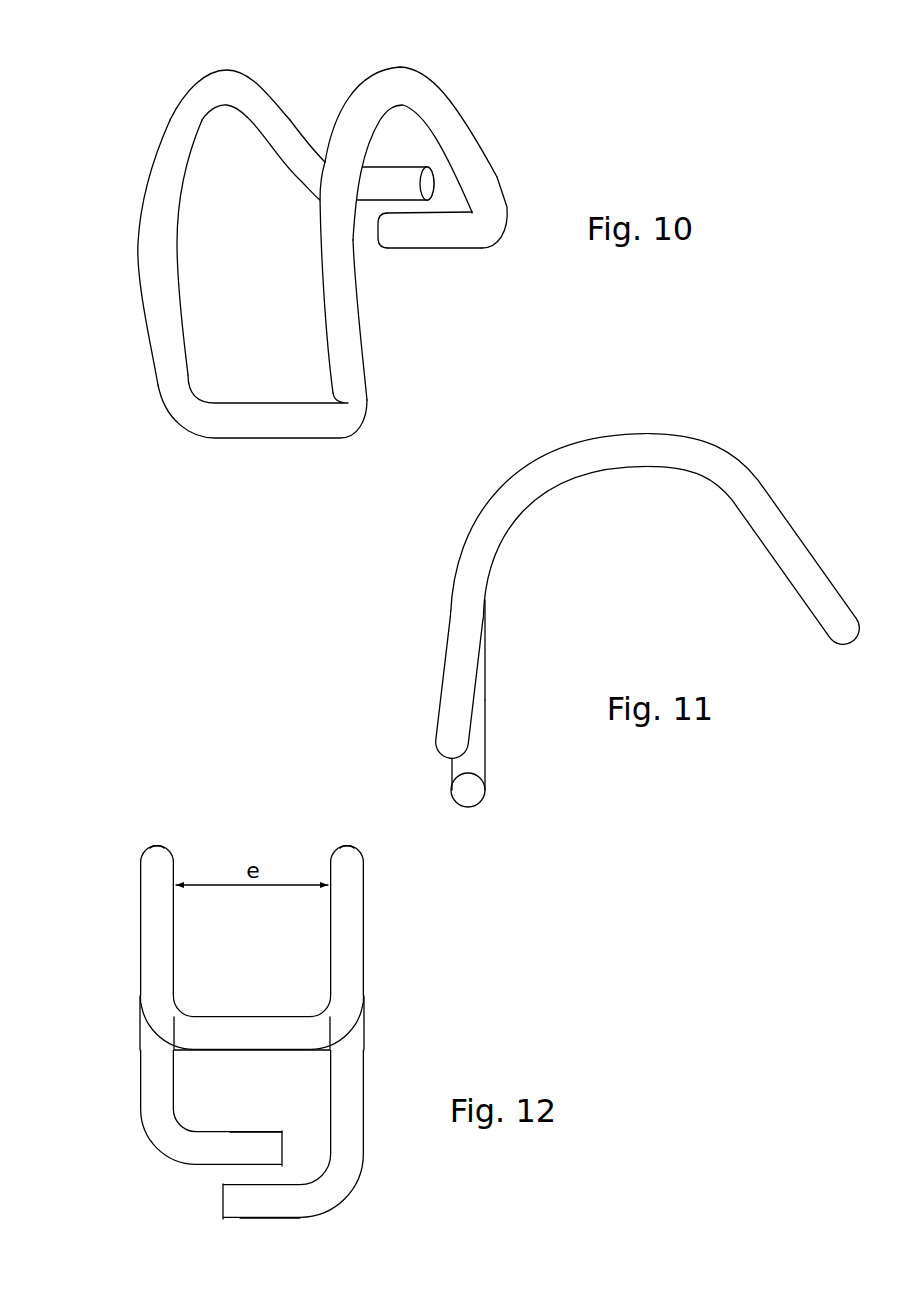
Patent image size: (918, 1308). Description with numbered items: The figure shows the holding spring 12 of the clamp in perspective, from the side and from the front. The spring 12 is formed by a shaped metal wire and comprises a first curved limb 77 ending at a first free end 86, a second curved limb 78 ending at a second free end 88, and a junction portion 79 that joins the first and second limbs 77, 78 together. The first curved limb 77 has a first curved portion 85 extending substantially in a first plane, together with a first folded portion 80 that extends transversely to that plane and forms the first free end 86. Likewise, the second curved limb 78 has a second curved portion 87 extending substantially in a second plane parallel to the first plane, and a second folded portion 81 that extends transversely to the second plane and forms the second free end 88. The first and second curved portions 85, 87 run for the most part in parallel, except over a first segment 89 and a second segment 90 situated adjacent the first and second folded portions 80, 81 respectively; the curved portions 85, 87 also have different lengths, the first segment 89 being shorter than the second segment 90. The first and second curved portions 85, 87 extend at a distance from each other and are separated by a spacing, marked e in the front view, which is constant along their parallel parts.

In FIG. 10, the spring 12 is at (116, 310).
In FIG. 11, the spring 12 is at (797, 462).
In FIG. 12, the spring 12 is at (443, 970).
In FIG. 10, the first curved limb 77 is at (217, 68).
In FIG. 11, the first curved limb 77 is at (580, 441).
In FIG. 12, the first curved limb 77 is at (158, 845).
In FIG. 10, the second curved limb 78 is at (400, 68).
In FIG. 11, the second curved limb 78 is at (487, 666).
In FIG. 12, the second curved limb 78 is at (347, 845).
In FIG. 10, the junction portion 79 is at (260, 422).
In FIG. 12, the junction portion 79 is at (252, 1027).
In FIG. 10, the first folded portion 80 is at (397, 177).
In FIG. 12, the first folded portion 80 is at (231, 1142).
In FIG. 10, the second folded portion 81 is at (422, 240).
In FIG. 12, the second folded portion 81 is at (248, 1208).
In FIG. 10, the first curved portion 85 is at (170, 165).
In FIG. 11, the first curved portion 85 is at (690, 447).
In FIG. 12, the first curved portion 85 is at (145, 890).
In FIG. 10, the first free end 86 is at (428, 183).
In FIG. 12, the first free end 86 is at (283, 1145).
In FIG. 10, the second curved portion 87 is at (328, 240).
In FIG. 12, the second curved portion 87 is at (355, 888).
In FIG. 10, the second free end 88 is at (377, 243).
In FIG. 11, the second free end 88 is at (474, 800).
In FIG. 12, the second free end 88 is at (222, 1200).
In FIG. 10, the first segment 89 is at (293, 124).
In FIG. 11, the first segment 89 is at (440, 718).
In FIG. 12, the first segment 89 is at (147, 1085).
In FIG. 10, the second segment 90 is at (485, 188).
In FIG. 11, the second segment 90 is at (483, 716).
In FIG. 12, the second segment 90 is at (352, 1098).